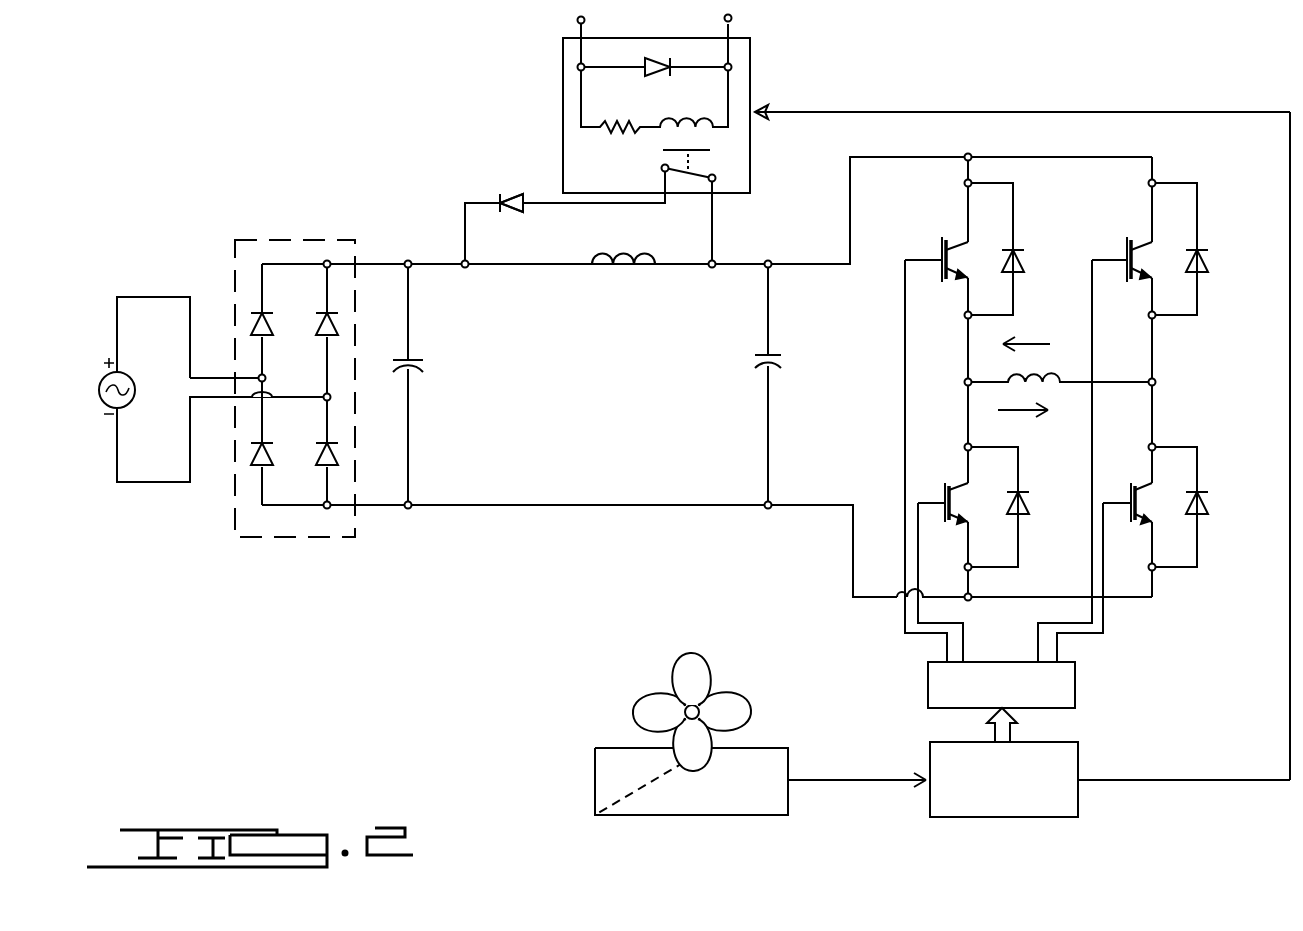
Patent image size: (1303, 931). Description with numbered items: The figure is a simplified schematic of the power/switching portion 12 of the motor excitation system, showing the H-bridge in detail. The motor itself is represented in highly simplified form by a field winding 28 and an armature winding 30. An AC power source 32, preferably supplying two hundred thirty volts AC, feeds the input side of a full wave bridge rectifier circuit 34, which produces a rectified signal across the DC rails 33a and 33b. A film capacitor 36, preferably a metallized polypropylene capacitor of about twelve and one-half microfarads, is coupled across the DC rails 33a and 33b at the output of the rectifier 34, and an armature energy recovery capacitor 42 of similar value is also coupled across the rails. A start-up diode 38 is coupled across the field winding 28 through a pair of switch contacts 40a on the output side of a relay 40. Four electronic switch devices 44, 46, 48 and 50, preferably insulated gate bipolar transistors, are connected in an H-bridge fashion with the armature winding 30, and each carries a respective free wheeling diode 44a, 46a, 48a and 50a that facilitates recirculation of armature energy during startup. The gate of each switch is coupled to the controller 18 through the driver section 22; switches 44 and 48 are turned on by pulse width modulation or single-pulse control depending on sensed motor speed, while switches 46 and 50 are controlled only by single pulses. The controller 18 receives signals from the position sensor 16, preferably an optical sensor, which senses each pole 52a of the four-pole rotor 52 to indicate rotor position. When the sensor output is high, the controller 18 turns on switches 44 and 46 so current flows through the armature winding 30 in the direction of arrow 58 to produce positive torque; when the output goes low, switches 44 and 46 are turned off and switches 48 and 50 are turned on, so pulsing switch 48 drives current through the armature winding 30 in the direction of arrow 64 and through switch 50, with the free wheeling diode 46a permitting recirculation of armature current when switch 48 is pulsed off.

The power/switching portion 12 is at (663, 505).
The position sensor 16 is at (595, 776).
The controller 18 is at (1072, 805).
The driver section 22 is at (1072, 690).
The field winding 28 is at (622, 273).
The armature winding 30 is at (1002, 378).
The AC power source 32 is at (100, 407).
The DC rail 33a is at (385, 262).
The DC rail 33b is at (385, 510).
The full wave bridge rectifier circuit 34 is at (249, 238).
The film capacitor 36 is at (426, 364).
The start-up diode 38 is at (511, 198).
The relay 40 is at (560, 93).
The switch contacts 40a is at (661, 167).
The armature energy recovery capacitor 42 is at (755, 360).
The electronic switch device 44 is at (940, 249).
The free wheeling diode 44a is at (1022, 264).
The electronic switch device 46 is at (1129, 487).
The free wheeling diode 46a is at (1208, 508).
The electronic switch device 48 is at (1128, 238).
The free wheeling diode 48a is at (1208, 266).
The electronic switch device 50 is at (944, 488).
The free wheeling diode 50a is at (1022, 518).
The rotor 52 is at (668, 673).
The pole 52a is at (703, 665).
The arrow 58 is at (1024, 414).
The arrow 64 is at (1046, 343).